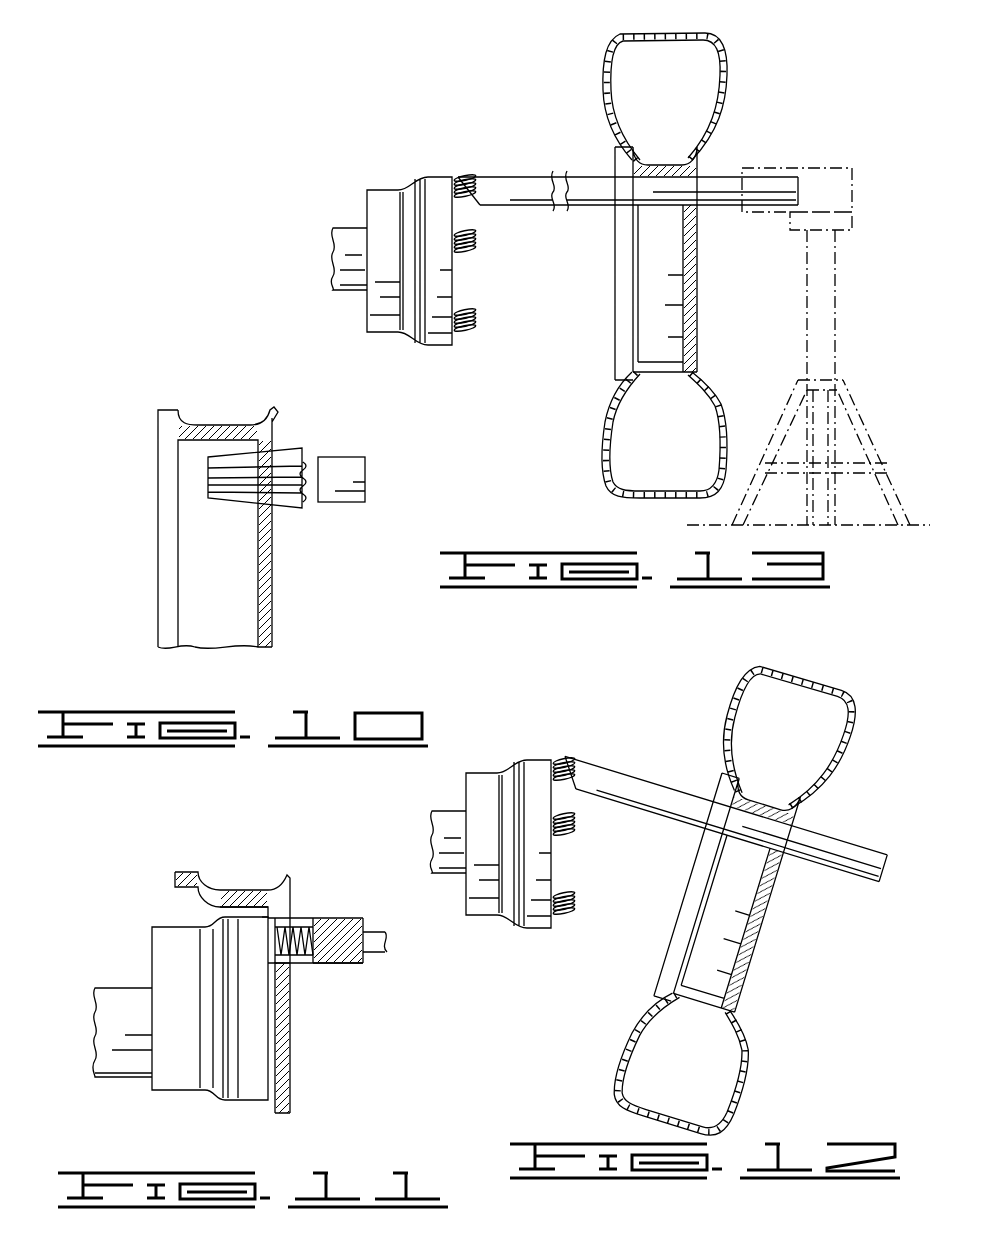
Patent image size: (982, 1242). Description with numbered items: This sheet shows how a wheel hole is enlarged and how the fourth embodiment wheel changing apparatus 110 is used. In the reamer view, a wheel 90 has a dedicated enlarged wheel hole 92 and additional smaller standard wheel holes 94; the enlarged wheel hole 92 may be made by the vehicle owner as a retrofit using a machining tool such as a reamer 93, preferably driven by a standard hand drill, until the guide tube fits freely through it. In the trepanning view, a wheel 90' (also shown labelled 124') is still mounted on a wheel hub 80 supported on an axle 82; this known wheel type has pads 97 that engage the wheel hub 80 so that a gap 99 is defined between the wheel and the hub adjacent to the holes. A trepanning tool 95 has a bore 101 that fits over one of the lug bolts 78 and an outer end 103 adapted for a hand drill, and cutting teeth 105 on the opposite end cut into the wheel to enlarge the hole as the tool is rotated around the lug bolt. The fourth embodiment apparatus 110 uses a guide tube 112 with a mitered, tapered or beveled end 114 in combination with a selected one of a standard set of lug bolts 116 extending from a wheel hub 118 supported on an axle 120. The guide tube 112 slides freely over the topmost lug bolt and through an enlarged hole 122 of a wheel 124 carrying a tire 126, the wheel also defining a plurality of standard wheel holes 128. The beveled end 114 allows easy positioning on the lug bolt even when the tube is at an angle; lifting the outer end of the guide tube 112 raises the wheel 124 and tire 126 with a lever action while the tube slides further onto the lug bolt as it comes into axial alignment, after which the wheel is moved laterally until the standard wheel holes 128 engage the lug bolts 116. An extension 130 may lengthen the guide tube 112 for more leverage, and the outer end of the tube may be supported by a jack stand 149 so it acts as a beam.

In FIG. 13, the fourth embodiment wheel changing apparatus 110 is at (504, 113).
In FIG. 12, the fourth embodiment wheel changing apparatus 110 is at (640, 714).
In FIG. 13, the guide tube 112 is at (510, 188).
In FIG. 12, the guide tube 112 is at (665, 795).
In FIG. 13, the beveled end 114 is at (482, 200).
In FIG. 12, the beveled end 114 is at (573, 785).
In FIG. 13, the lug bolts 116 is at (477, 175).
In FIG. 11, the lug bolts 116 is at (310, 932).
In FIG. 12, the lug bolts 116 is at (557, 762).
In FIG. 13, the wheel hub 118 is at (415, 192).
In FIG. 11, the wheel hub 118 is at (182, 967).
In FIG. 12, the wheel hub 118 is at (510, 798).
In FIG. 13, the axle 120 is at (347, 248).
In FIG. 11, the axle 120 is at (128, 1008).
In FIG. 12, the axle 120 is at (438, 823).
In FIG. 13, the enlarged hole 122 is at (690, 196).
In FIG. 10, the enlarged hole 122 is at (283, 458).
In FIG. 11, the enlarged hole 122 is at (300, 915).
In FIG. 12, the enlarged hole 122 is at (777, 843).
In FIG. 13, the wheel 124 is at (696, 263).
In FIG. 10, the wheel 124 is at (241, 503).
In FIG. 12, the wheel 124 is at (780, 896).
In FIG. 13, the tire 126 is at (725, 68).
In FIG. 12, the tire 126 is at (740, 670).
In FIG. 13, the standard wheel holes 128 is at (697, 240).
In FIG. 10, the standard wheel holes 128 is at (273, 580).
In FIG. 11, the standard wheel holes 128 is at (292, 1048).
In FIG. 12, the standard wheel holes 128 is at (772, 877).
In FIG. 13, the extension 130 is at (762, 167).
In FIG. 13, the jack stand 149 is at (827, 300).
In FIG. 10, the wheel 90 is at (241, 503).
In FIG. 10, the enlarged wheel hole 92 is at (300, 456).
In FIG. 11, the enlarged wheel hole 92 is at (360, 936).
In FIG. 10, the reamer 93 is at (358, 482).
In FIG. 10, the standard wheel holes 94 is at (329, 544).
In FIG. 11, the standard wheel holes 94 is at (352, 1038).
In FIG. 11, the wheel 90' is at (260, 973).
In FIG. 11, the rim 124' is at (260, 973).
In FIG. 11, the gap 99 is at (270, 916).
In FIG. 11, the cutting teeth 105 is at (233, 910).
In FIG. 11, the wheel hub 80 is at (169, 955).
In FIG. 11, the axle 82 is at (89, 1007).
In FIG. 11, the lug bolts 78 is at (353, 923).
In FIG. 11, the trepanning tool 95 is at (353, 932).
In FIG. 11, the pads 97 is at (290, 993).
In FIG. 11, the bore 101 is at (322, 967).
In FIG. 11, the outer end 103 is at (373, 943).